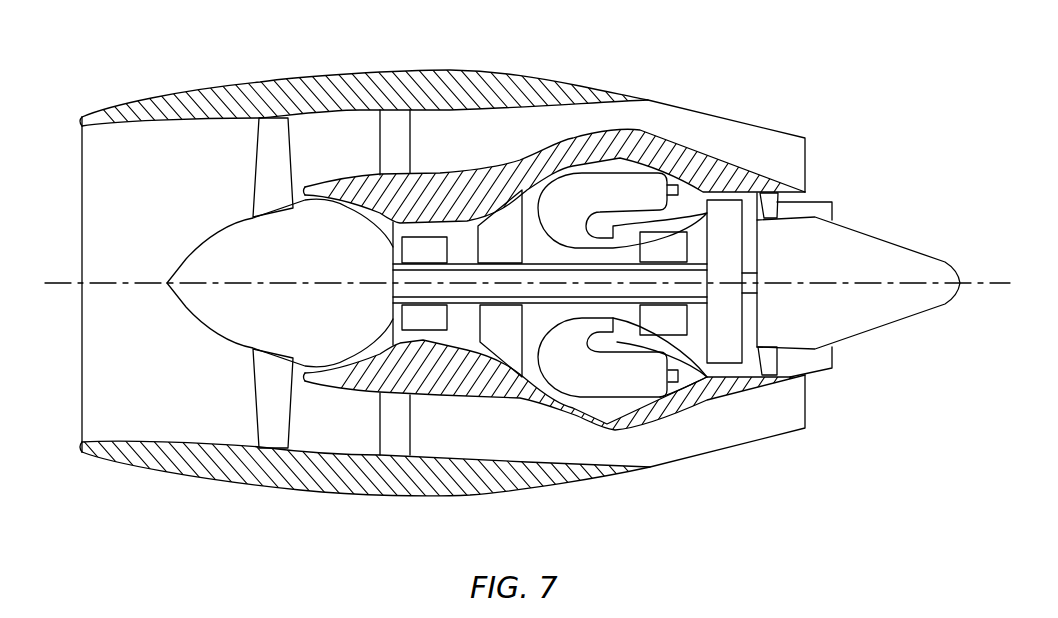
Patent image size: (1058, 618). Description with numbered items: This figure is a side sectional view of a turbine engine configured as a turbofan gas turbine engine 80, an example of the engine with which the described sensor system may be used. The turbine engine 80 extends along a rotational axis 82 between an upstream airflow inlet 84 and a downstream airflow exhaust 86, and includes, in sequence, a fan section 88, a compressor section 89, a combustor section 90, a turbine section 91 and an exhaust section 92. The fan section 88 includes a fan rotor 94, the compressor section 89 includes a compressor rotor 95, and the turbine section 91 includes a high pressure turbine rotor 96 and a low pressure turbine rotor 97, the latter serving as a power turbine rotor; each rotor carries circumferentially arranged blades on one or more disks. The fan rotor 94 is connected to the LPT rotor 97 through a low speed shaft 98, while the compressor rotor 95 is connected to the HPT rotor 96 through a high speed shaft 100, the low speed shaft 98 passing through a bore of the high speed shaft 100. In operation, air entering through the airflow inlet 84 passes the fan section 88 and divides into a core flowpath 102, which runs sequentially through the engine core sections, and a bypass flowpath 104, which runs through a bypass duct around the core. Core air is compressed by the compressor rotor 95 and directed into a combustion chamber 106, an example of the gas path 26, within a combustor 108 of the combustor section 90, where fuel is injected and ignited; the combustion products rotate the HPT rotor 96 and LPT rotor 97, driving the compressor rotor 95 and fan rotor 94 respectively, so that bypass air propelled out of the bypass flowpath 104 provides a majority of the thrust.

The turbofan gas turbine engine 80 is at (731, 87).
The rotational axis 82 is at (165, 281).
The upstream airflow inlet 84 is at (82, 178).
The downstream airflow exhaust 86 is at (833, 208).
The fan section 88 is at (217, 159).
The compressor section 89 is at (462, 247).
The combustor section 90 is at (600, 167).
The turbine section 91 is at (692, 223).
The exhaust section 92 is at (826, 378).
The fan rotor 94 is at (210, 335).
The compressor rotor 95 is at (447, 350).
The high pressure turbine (HPT) rotor 96 is at (687, 322).
The low pressure turbine (LPT) rotor 97 is at (745, 293).
The low speed shaft 98 is at (410, 295).
The high speed shaft 100 is at (535, 262).
The core flowpath 102 is at (790, 208).
The bypass flowpath 104 is at (768, 162).
The combustion chamber 106 is at (620, 390).
The gas path 26 is at (663, 247).
The combustor 108 is at (585, 392).